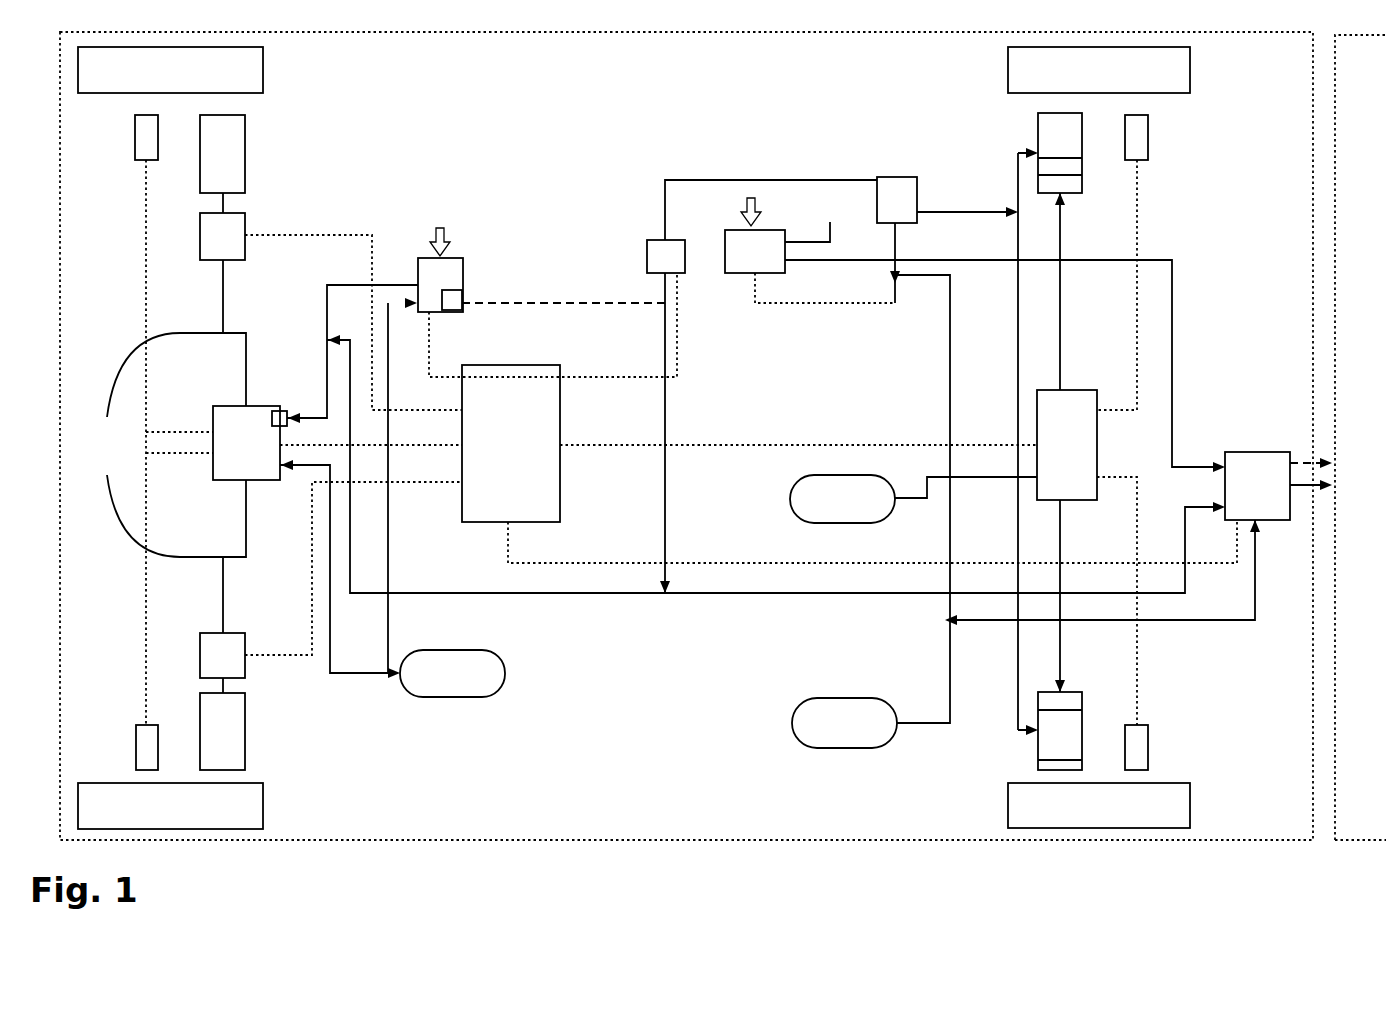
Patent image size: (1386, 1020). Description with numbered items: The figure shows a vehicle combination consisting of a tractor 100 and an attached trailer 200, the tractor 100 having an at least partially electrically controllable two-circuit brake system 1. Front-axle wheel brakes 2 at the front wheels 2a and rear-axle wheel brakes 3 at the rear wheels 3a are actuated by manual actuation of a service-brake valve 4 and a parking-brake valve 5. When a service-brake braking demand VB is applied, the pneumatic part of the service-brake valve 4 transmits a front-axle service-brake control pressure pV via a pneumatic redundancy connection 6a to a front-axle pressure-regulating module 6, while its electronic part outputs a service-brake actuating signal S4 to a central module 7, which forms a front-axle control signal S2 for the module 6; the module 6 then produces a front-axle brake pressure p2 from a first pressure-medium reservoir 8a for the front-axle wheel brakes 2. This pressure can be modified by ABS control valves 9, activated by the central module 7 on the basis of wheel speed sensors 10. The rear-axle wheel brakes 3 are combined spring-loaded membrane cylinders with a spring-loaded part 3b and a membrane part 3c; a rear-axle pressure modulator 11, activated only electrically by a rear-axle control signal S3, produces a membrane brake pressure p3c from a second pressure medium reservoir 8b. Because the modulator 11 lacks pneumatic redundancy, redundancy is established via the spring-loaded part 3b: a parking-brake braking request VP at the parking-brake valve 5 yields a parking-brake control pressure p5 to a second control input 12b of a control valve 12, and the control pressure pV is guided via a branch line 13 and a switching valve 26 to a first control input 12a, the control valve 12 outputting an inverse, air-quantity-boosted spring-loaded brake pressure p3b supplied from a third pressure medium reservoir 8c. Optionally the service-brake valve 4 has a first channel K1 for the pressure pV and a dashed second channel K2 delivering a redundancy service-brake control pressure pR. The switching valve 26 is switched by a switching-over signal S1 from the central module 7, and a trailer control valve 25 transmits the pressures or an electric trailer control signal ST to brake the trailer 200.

The brake system 1 is at (460, 740).
The tractor 100 is at (690, 845).
The trailer 200 is at (1382, 848).
The front-axle wheel brakes 2 is at (212, 170).
The front wheels 2a is at (203, 88).
The rear-axle wheel brakes 3 is at (1020, 118).
The rear wheels 3a is at (1030, 88).
The spring-loaded part 3b is at (1044, 154).
The membrane part 3c is at (1082, 182).
The service-brake valve 4 is at (418, 262).
The parking-brake valve 5 is at (744, 270).
The front-axle pressure-regulating module 6 is at (235, 457).
The pneumatic redundancy connection 6a is at (281, 410).
The central module 7 is at (500, 460).
The first pressure-medium reservoir 8a is at (432, 689).
The second pressure medium reservoir 8b is at (822, 514).
The third pressure medium reservoir 8c is at (825, 738).
The ABS control valves 9 is at (200, 235).
The wheel speed sensors 10 is at (135, 138).
The rear-axle pressure modulator 11 is at (1048, 455).
The control valve 12 is at (898, 130).
The first control input 12a is at (875, 177).
The second control input 12b is at (877, 215).
The branch line 13 is at (327, 320).
The trailer control valve 25 is at (1238, 505).
The switching valve 26 is at (655, 240).
The service-brake braking demand VB is at (433, 218).
The parking-brake braking request VP is at (727, 213).
The first channel K1 is at (463, 258).
The second channel K2 is at (455, 293).
The front-axle service-brake control pressure pV is at (352, 283).
The redundancy service-brake control pressure pR is at (608, 302).
The front-axle brake pressure p2 is at (165, 445).
The parking-brake control pressure p5 is at (830, 222).
The spring-loaded brake pressure p3b is at (980, 212).
The membrane brake pressure p3c is at (1060, 547).
The switching-over signal S1 is at (677, 363).
The front-axle control signal S2 is at (370, 443).
The rear-axle control signal S3 is at (813, 445).
The service-brake actuating signal S4 is at (430, 347).
The electric trailer control signal ST is at (877, 562).